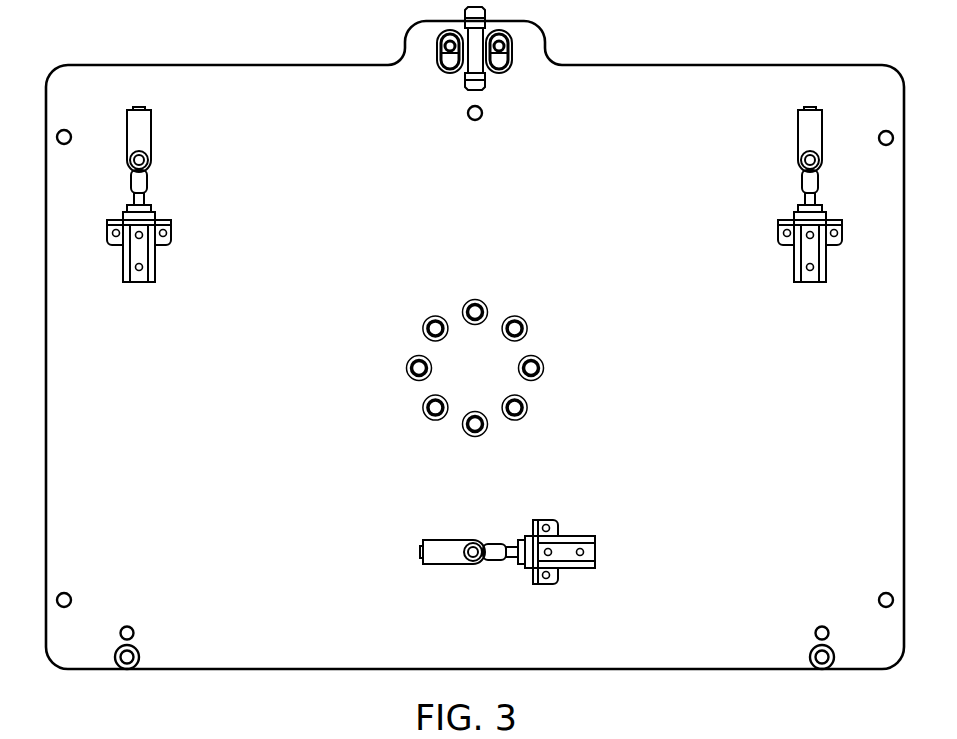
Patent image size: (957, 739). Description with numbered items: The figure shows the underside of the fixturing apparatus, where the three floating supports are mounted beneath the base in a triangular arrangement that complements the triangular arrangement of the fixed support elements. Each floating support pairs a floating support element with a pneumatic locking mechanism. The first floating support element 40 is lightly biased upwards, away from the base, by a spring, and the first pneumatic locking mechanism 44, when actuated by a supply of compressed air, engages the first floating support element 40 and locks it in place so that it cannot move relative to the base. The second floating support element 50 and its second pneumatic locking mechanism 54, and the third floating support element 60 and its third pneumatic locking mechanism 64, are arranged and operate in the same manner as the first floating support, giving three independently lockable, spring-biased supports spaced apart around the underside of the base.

The first floating support element 40 is at (477, 547).
The first pneumatic locking mechanism 44 is at (577, 540).
The second floating support element 50 is at (146, 157).
The second pneumatic locking mechanism 54 is at (150, 267).
The third floating support element 60 is at (816, 157).
The third pneumatic locking mechanism 64 is at (820, 267).